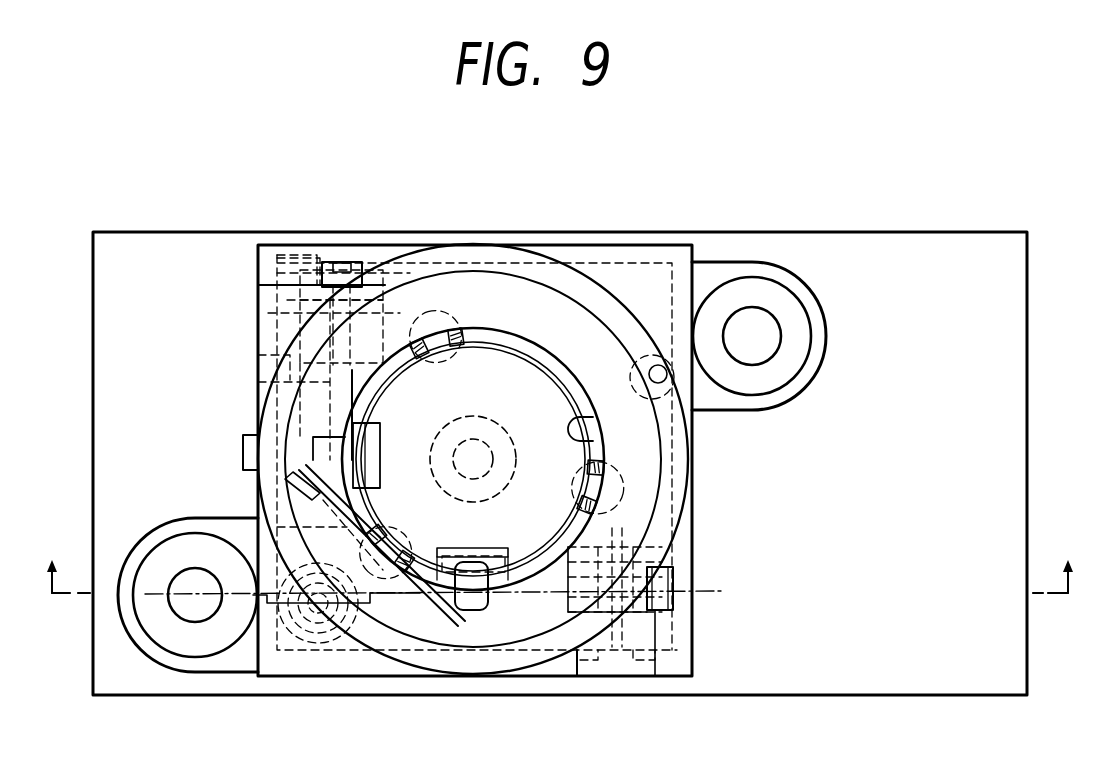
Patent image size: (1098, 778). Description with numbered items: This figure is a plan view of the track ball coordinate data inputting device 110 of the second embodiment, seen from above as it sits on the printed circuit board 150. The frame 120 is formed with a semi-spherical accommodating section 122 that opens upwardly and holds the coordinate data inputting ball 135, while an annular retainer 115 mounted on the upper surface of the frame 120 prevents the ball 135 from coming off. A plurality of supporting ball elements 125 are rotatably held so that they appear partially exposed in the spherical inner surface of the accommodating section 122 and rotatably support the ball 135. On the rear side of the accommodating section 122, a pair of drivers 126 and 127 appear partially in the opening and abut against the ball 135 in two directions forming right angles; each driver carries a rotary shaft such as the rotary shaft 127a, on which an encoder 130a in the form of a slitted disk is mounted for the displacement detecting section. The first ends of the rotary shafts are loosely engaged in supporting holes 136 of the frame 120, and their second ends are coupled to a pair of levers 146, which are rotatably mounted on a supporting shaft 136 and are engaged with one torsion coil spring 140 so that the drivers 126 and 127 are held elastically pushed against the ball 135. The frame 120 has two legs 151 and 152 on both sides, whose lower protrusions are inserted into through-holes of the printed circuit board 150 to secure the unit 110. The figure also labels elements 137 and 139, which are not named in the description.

The track ball coordinate data inputting device 110 is at (172, 210).
The annular retainer 115 is at (555, 363).
The frame 120 is at (485, 245).
The semi-spherical accommodating section 122 is at (595, 430).
The supporting ball elements 125 is at (435, 308).
The driver 126 is at (485, 615).
The driver 127 is at (310, 450).
The rotary shaft 127a is at (313, 380).
The encoder 130a is at (293, 247).
The coordinate data inputting ball 135 is at (507, 377).
The supporting hole 136 is at (370, 286).
The adjusting screw 137 is at (645, 612).
The pivot pin 139 is at (316, 618).
The torsion coil spring 140 is at (243, 458).
The levers 146 is at (298, 508).
The printed circuit board 150 is at (900, 250).
The leg 151 is at (760, 265).
The leg 152 is at (180, 635).